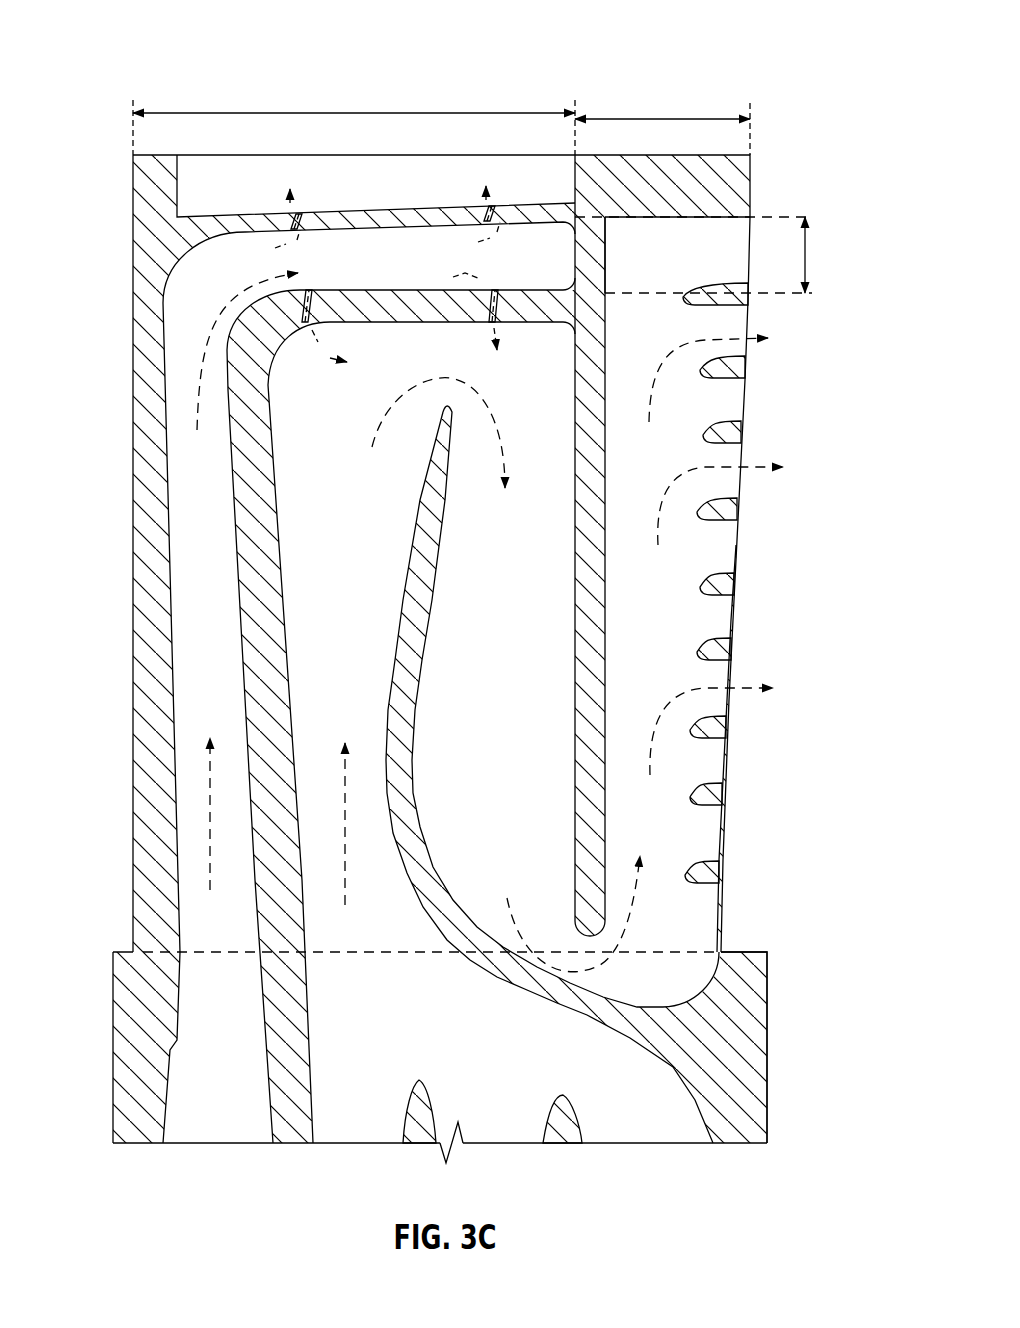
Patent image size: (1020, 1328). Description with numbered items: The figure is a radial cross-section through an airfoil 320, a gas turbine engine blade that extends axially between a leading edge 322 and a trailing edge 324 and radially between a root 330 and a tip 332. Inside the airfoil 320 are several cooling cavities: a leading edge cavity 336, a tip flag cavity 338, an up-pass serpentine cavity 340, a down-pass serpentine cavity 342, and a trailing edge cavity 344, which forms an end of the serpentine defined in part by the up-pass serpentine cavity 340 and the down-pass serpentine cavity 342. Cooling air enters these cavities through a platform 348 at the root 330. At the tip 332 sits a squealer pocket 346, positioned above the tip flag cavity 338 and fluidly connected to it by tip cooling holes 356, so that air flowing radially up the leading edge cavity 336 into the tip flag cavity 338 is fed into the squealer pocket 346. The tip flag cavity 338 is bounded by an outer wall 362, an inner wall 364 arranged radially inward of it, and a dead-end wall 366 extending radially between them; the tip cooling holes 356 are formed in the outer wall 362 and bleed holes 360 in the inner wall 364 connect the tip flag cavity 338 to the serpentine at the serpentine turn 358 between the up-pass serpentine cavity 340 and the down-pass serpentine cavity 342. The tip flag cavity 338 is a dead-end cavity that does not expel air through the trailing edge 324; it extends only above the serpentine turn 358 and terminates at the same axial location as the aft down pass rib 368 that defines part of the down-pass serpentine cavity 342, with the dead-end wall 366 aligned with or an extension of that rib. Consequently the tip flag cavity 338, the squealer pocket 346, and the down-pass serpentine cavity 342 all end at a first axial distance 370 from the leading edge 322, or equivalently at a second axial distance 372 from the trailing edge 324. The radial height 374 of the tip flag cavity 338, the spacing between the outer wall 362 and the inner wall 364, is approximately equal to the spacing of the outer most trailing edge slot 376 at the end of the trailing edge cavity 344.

The airfoil 320 is at (777, 39).
The leading edge 322 is at (134, 358).
The trailing edge 324 is at (738, 433).
The root 330 is at (122, 905).
The tip 332 is at (766, 151).
The leading edge cavity 336 is at (188, 650).
The tip flag cavity 338 is at (513, 275).
The up-pass serpentine cavity 340 is at (336, 603).
The down-pass serpentine cavity 342 is at (471, 666).
The trailing edge cavity 344 is at (643, 603).
The squealer pocket 346 is at (315, 201).
The platform 348 is at (741, 957).
The tip cooling holes 356 is at (278, 201).
The serpentine turn 358 is at (423, 368).
The bleed holes 360 is at (505, 332).
The outer wall 362 is at (370, 223).
The inner wall 364 is at (398, 322).
The dead-end wall 366 is at (604, 263).
The aft down pass rib 368 is at (602, 485).
The first axial distance 370 is at (350, 111).
The second axial distance 372 is at (668, 117).
The radial height 374 is at (808, 258).
The outer most trailing edge slot 376 is at (729, 247).